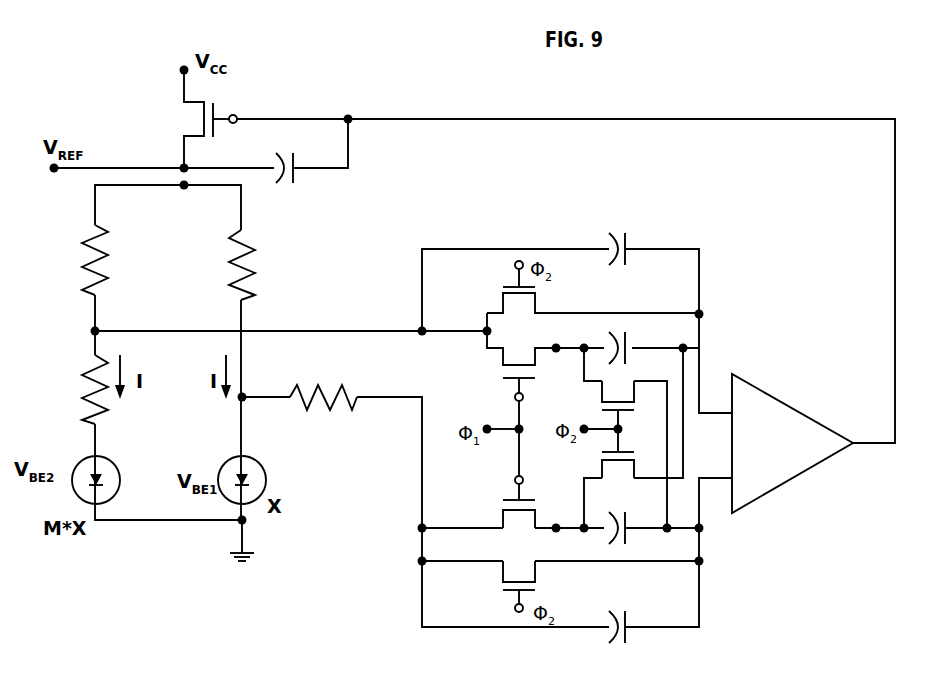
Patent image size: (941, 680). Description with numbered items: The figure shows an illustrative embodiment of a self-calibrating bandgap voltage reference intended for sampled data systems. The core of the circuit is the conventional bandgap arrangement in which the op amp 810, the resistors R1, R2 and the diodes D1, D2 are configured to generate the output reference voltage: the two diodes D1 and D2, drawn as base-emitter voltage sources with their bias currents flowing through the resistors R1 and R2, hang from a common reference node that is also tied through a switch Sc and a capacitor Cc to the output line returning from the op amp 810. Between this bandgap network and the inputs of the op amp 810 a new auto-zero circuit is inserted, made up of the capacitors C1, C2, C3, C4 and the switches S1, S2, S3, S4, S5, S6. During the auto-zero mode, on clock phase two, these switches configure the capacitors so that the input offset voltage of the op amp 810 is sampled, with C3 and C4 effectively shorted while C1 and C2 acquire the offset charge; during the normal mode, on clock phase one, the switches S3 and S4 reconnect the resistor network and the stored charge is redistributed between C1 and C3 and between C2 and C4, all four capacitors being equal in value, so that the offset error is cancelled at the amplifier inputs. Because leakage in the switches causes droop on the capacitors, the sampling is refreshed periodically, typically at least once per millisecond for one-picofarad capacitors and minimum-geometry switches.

The op amp 810 is at (810, 442).
The switch Sc is at (203, 117).
The capacitor Cc is at (303, 177).
The resistor R1 is at (197, 389).
The resistor R2 is at (166, 262).
The diode D1 is at (258, 479).
The diode D2 is at (111, 479).
The capacitor C1 is at (631, 342).
The capacitor C2 is at (629, 522).
The capacitor C3 is at (629, 237).
The capacitor C4 is at (629, 621).
The switch S1 is at (618, 405).
The switch S2 is at (618, 462).
The switch S3 is at (519, 374).
The switch S4 is at (519, 510).
The switch S5 is at (519, 296).
The switch S6 is at (519, 586).